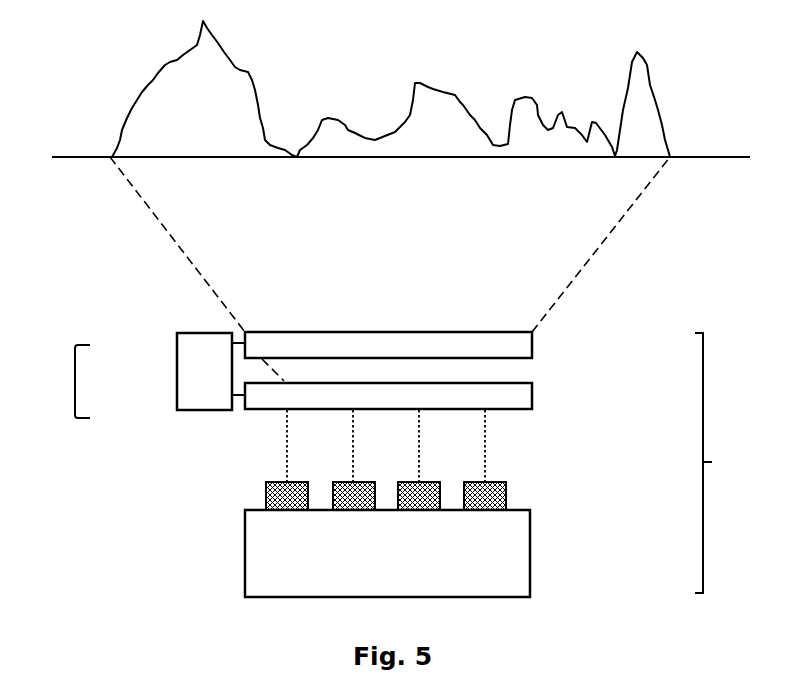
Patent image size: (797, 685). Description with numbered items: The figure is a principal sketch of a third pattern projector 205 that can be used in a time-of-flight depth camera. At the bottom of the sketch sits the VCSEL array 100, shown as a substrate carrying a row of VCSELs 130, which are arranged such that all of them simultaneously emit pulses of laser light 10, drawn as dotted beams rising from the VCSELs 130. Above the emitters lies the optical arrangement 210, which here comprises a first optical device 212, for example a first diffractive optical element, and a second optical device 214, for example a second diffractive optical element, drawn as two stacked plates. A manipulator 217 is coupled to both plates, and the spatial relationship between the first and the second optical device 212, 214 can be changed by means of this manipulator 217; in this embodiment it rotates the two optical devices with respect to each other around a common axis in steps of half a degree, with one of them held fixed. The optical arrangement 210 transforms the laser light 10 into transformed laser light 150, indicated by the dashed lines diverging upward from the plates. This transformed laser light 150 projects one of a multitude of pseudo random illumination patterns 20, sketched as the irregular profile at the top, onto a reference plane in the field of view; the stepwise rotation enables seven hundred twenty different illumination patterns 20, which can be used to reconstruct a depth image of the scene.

The pseudo random illumination pattern 20 is at (645, 62).
The transformed laser light 150 is at (580, 275).
The second optical device 214 is at (532, 345).
The first optical device 212 is at (532, 395).
The manipulator 217 is at (177, 358).
The optical arrangement 210 is at (75, 380).
The pattern projector 205 is at (730, 463).
The laser light 10 is at (488, 460).
The VCSELs 130 is at (266, 498).
The VCSEL array 100 is at (532, 543).